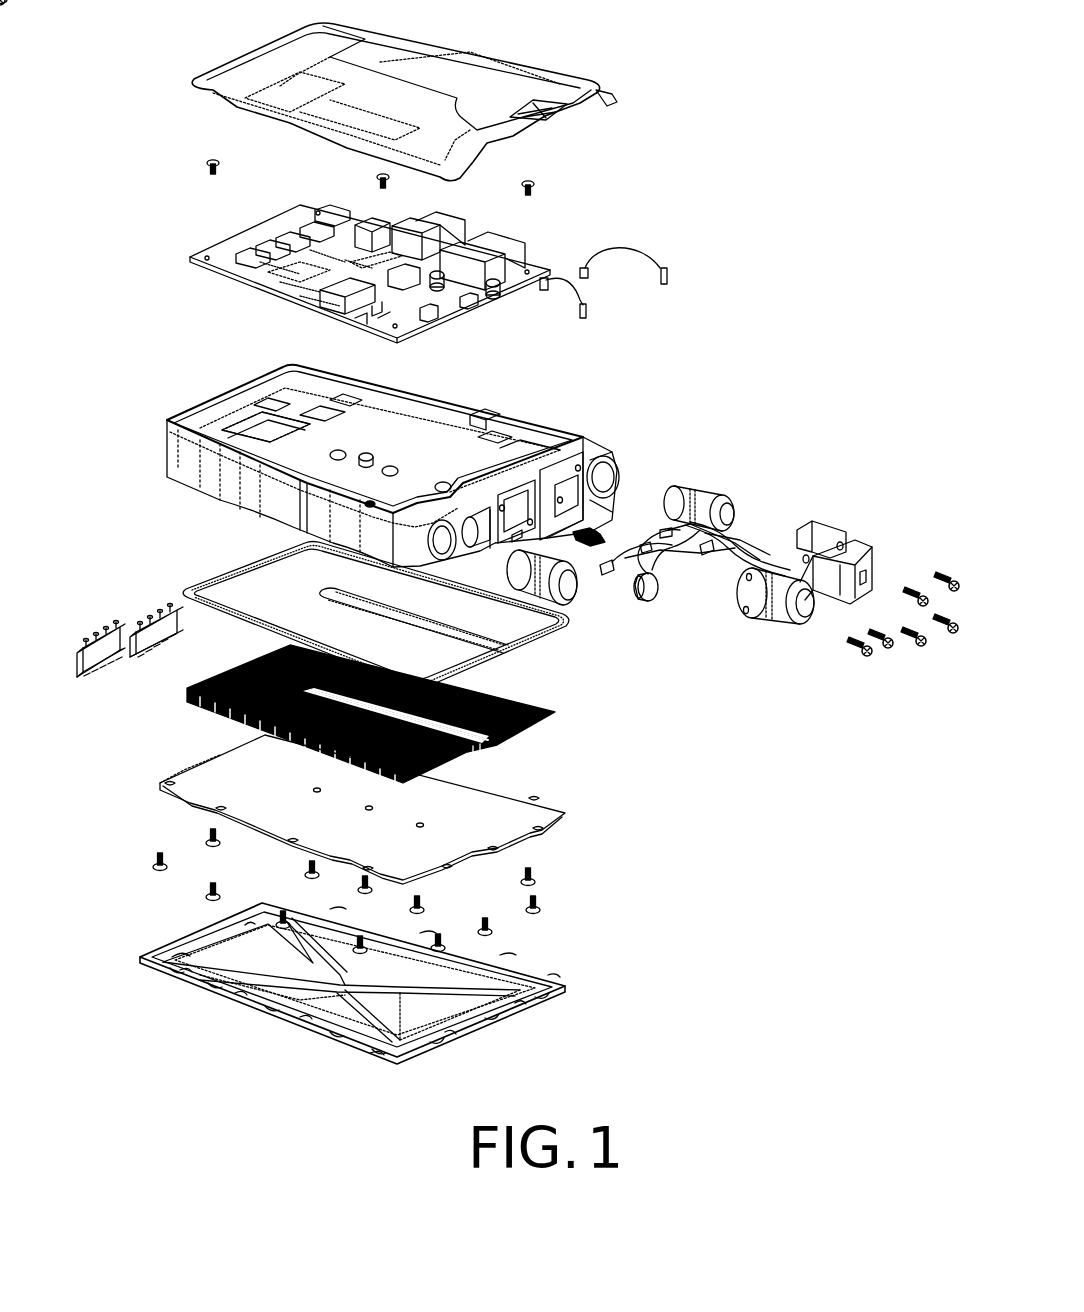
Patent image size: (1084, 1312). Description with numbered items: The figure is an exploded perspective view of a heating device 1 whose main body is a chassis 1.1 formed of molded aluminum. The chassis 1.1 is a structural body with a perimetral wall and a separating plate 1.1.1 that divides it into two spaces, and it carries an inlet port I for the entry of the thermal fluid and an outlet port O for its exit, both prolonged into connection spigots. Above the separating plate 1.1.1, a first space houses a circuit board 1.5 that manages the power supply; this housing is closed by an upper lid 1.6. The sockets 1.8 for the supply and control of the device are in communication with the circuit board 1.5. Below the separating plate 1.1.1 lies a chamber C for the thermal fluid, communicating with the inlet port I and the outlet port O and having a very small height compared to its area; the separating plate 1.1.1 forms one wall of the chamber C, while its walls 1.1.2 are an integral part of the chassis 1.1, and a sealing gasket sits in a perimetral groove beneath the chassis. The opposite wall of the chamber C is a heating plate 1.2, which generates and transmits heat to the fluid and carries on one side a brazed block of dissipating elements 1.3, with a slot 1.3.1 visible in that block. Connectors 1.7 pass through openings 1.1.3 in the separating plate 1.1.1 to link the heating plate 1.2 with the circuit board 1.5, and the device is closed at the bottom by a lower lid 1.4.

The heating device 1 is at (783, 271).
The chassis 1.1 is at (598, 450).
The separating plate 1.1.1 is at (417, 403).
The walls 1.1.2 is at (540, 650).
The openings 1.1.3 is at (263, 410).
The heating plate 1.2 is at (207, 783).
The dissipating elements 1.3 is at (507, 743).
The heat sink slot 1.3.1 is at (203, 690).
The lower lid 1.4 is at (507, 987).
The circuit board 1.5 is at (510, 267).
The upper lid 1.6 is at (480, 60).
The connectors 1.7 is at (160, 627).
The sockets 1.8 is at (847, 567).
The chamber C is at (240, 550).
The inlet port I is at (793, 539).
The outlet port O is at (607, 594).